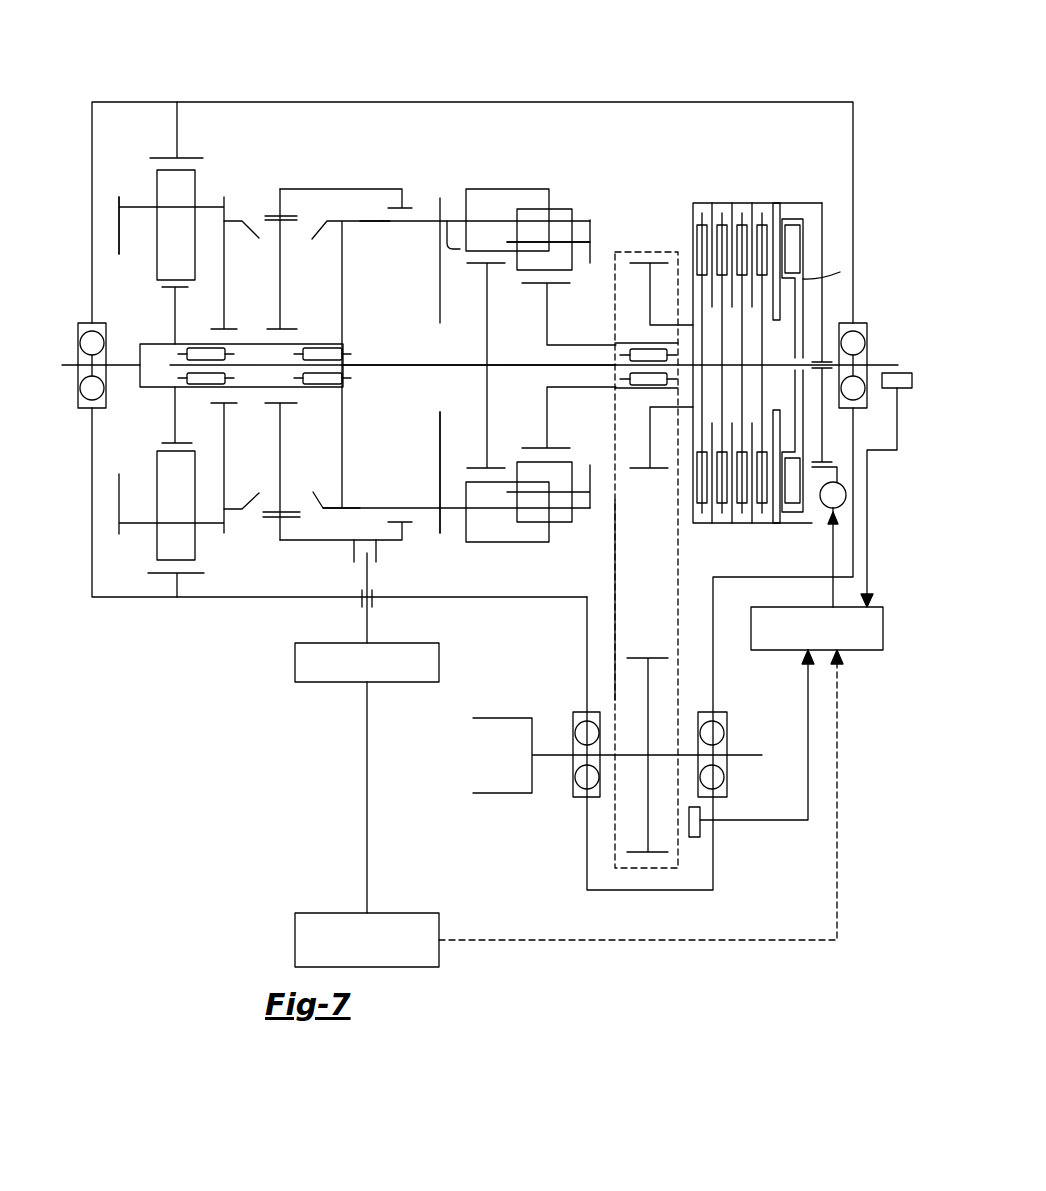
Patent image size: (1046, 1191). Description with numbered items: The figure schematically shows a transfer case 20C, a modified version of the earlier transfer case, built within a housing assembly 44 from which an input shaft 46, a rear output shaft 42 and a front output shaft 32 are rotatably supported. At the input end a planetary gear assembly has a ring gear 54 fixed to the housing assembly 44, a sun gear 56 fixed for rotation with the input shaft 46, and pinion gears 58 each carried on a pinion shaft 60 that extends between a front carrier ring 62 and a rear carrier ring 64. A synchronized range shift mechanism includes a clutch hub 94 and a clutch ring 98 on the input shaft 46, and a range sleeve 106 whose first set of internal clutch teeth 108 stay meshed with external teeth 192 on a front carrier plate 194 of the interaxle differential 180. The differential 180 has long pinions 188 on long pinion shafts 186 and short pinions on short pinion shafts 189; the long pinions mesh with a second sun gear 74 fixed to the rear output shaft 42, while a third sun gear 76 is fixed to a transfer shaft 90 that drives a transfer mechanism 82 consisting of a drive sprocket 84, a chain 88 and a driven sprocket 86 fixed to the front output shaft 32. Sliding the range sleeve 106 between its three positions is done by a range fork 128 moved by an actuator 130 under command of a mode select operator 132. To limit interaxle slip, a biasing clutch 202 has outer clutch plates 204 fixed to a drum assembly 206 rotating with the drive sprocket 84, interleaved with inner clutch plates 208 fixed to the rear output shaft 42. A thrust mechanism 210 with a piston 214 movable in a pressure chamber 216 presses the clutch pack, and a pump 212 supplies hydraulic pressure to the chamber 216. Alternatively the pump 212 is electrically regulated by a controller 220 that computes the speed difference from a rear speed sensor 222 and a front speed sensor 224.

The transfer case 20C is at (726, 86).
The housing assembly 44 is at (853, 102).
The input shaft 46 is at (118, 370).
The sun gear 56 is at (175, 310).
The ring gear 54 is at (177, 146).
The pinion gears 58 is at (188, 186).
The pinion shaft 60 is at (136, 205).
The front carrier ring 62 is at (119, 234).
The rear carrier ring 64 is at (224, 255).
The clutch hub 94 is at (280, 300).
The range sleeve 106 is at (332, 187).
The clutch ring 98 is at (342, 318).
The first set of internal clutch teeth 108 is at (440, 208).
The external teeth 192 is at (382, 222).
The long pinion shafts 186 is at (447, 243).
The front carrier plate 194 is at (440, 300).
The long pinions 188 is at (487, 196).
The interaxle differential 180 is at (540, 166).
The transfer shaft 90 is at (590, 236).
The short pinion shafts 189 is at (580, 247).
The second sun gear 74 is at (487, 344).
The third sun gear 76 is at (547, 322).
The drive sprocket 84 is at (650, 288).
The transfer mechanism 82 is at (682, 615).
The chain 88 is at (615, 545).
The driven sprocket 86 is at (648, 676).
The biasing clutch 202 is at (764, 325).
The outer clutch plates 204 is at (712, 208).
The drum assembly 206 is at (693, 212).
The inner clutch plates 208 is at (762, 360).
The thrust mechanism 210 is at (820, 236).
The piston 214 is at (803, 279).
The pressure chamber 216 is at (812, 210).
The pump 212 is at (818, 522).
The rear output shaft 42 is at (834, 323).
The rear speed sensor 222 is at (904, 373).
The front output shaft 32 is at (552, 755).
The front speed sensor 224 is at (700, 830).
The controller 220 is at (886, 650).
The range fork 128 is at (367, 572).
The actuator 130 is at (295, 664).
The mode select operator 132 is at (295, 941).